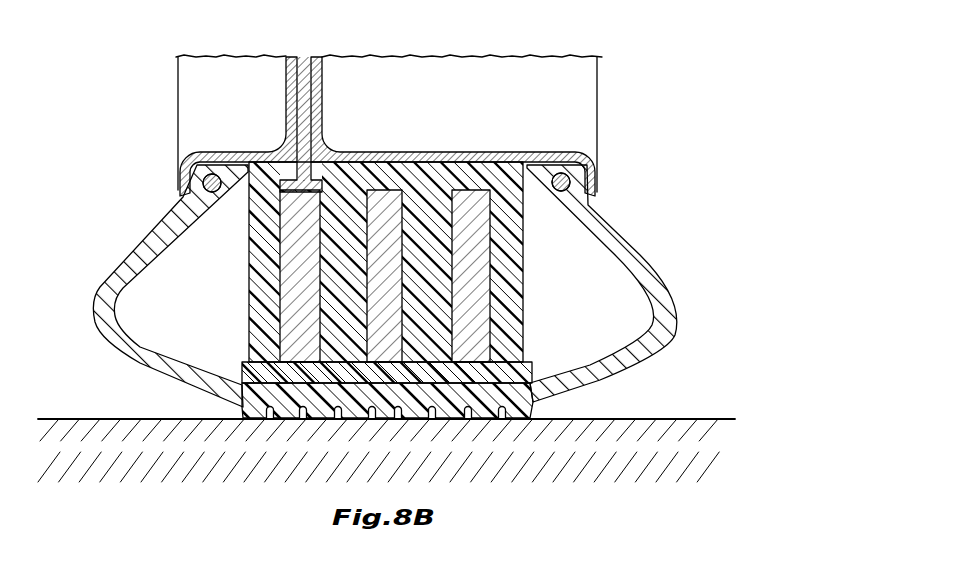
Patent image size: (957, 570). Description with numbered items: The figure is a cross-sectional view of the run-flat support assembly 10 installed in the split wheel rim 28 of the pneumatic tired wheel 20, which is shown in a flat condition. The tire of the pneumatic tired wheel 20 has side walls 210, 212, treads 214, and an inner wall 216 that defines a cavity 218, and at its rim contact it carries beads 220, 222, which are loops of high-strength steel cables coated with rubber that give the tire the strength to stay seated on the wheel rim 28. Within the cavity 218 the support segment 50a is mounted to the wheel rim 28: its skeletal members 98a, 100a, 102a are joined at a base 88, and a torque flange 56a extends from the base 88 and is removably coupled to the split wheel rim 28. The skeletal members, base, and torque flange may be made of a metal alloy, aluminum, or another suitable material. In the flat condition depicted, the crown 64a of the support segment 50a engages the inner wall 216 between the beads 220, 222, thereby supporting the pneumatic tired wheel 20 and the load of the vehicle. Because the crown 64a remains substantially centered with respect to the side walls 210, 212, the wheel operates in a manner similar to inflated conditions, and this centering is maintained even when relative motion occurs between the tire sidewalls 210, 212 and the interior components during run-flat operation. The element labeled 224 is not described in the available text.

The run-flat support assembly 10 is at (624, 119).
The pneumatic tired wheel 20 is at (394, 286).
The split wheel rim 28 is at (360, 103).
The support segment 50a is at (394, 286).
The torque flange 56a is at (303, 90).
The crown 64a is at (425, 432).
The base 88 is at (374, 219).
The skeletal member 98a is at (283, 257).
The skeletal member 100a is at (387, 200).
The skeletal member 102a is at (503, 296).
The side wall 210 is at (145, 286).
The side wall 212 is at (667, 347).
The treads 214 is at (487, 421).
The inner wall 216 is at (197, 372).
The cavity 218 is at (580, 356).
The bead 220 is at (185, 165).
The bead 222 is at (580, 168).
The side wall 224 is at (248, 320).